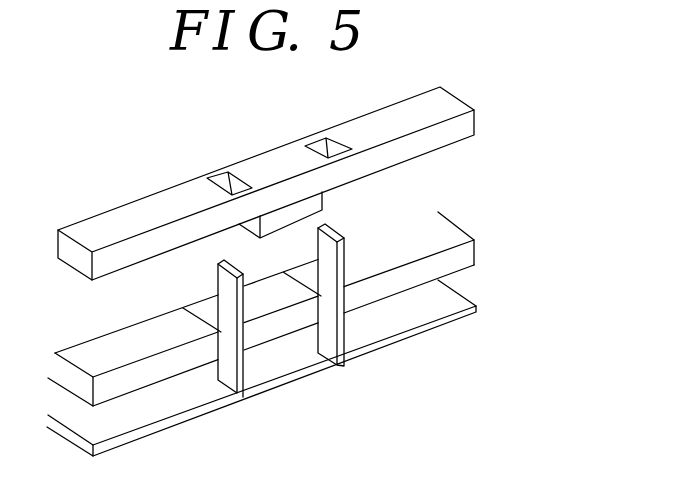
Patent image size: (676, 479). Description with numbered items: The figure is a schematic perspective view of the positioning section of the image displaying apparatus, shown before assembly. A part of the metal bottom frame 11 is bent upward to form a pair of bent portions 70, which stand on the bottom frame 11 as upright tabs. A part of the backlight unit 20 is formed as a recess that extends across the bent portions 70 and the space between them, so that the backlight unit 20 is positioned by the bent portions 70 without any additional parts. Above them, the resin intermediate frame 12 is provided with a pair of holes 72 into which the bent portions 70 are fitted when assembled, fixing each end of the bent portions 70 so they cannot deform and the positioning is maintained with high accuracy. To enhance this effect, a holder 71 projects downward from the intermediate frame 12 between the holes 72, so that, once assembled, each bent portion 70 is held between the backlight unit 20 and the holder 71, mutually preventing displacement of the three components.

The intermediate frame 12 is at (450, 140).
The holes 72 is at (306, 141).
The holder 71 is at (313, 203).
The backlight unit 20 is at (443, 230).
The bent portions 70 is at (325, 323).
The bottom frame 11 is at (400, 322).